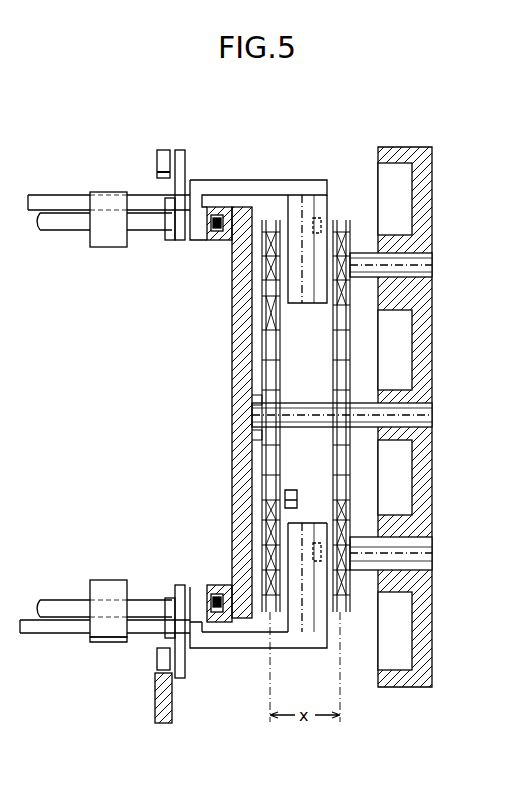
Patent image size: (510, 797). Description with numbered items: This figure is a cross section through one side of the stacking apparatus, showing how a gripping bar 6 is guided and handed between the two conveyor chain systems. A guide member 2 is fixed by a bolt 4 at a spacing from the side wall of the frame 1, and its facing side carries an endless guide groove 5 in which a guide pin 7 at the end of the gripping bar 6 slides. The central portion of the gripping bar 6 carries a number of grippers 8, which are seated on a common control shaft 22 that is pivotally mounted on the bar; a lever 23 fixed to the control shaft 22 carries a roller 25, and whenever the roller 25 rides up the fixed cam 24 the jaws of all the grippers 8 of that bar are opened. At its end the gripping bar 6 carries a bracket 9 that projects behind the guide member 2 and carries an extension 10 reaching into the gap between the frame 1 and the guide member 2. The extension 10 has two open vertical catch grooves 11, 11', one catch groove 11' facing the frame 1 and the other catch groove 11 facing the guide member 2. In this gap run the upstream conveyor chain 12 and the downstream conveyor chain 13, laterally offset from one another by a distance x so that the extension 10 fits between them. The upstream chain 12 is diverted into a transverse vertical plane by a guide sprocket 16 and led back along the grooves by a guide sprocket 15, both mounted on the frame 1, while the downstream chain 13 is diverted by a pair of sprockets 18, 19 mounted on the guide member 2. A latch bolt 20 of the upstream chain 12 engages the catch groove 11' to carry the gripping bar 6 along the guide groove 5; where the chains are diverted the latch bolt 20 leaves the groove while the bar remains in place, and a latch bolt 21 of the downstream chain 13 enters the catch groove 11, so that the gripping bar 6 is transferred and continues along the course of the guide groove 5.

The frame 1 is at (424, 226).
The guide member 2 is at (240, 352).
The bolt 4 is at (358, 408).
The guide groove 5 is at (219, 212).
The gripping bar 6 is at (58, 203).
The guide pin 7 is at (210, 243).
The gripper 8 is at (108, 248).
The bracket 9 is at (273, 190).
The extension 10 is at (298, 200).
The catch groove 11 is at (300, 321).
The catch groove 11' is at (324, 329).
The conveyor chain 12 is at (350, 512).
The conveyor chain 13 is at (242, 446).
The guide sprocket 15 is at (348, 236).
The guide sprocket 16 is at (348, 590).
The sprocket 18 is at (264, 306).
The sprocket 19 is at (264, 512).
The latch bolt 20 is at (318, 218).
The latch bolt 21 is at (294, 492).
The control shaft 22 is at (62, 228).
The lever 23 is at (184, 165).
The fixed cam 24 is at (160, 706).
The roller 25 is at (156, 163).